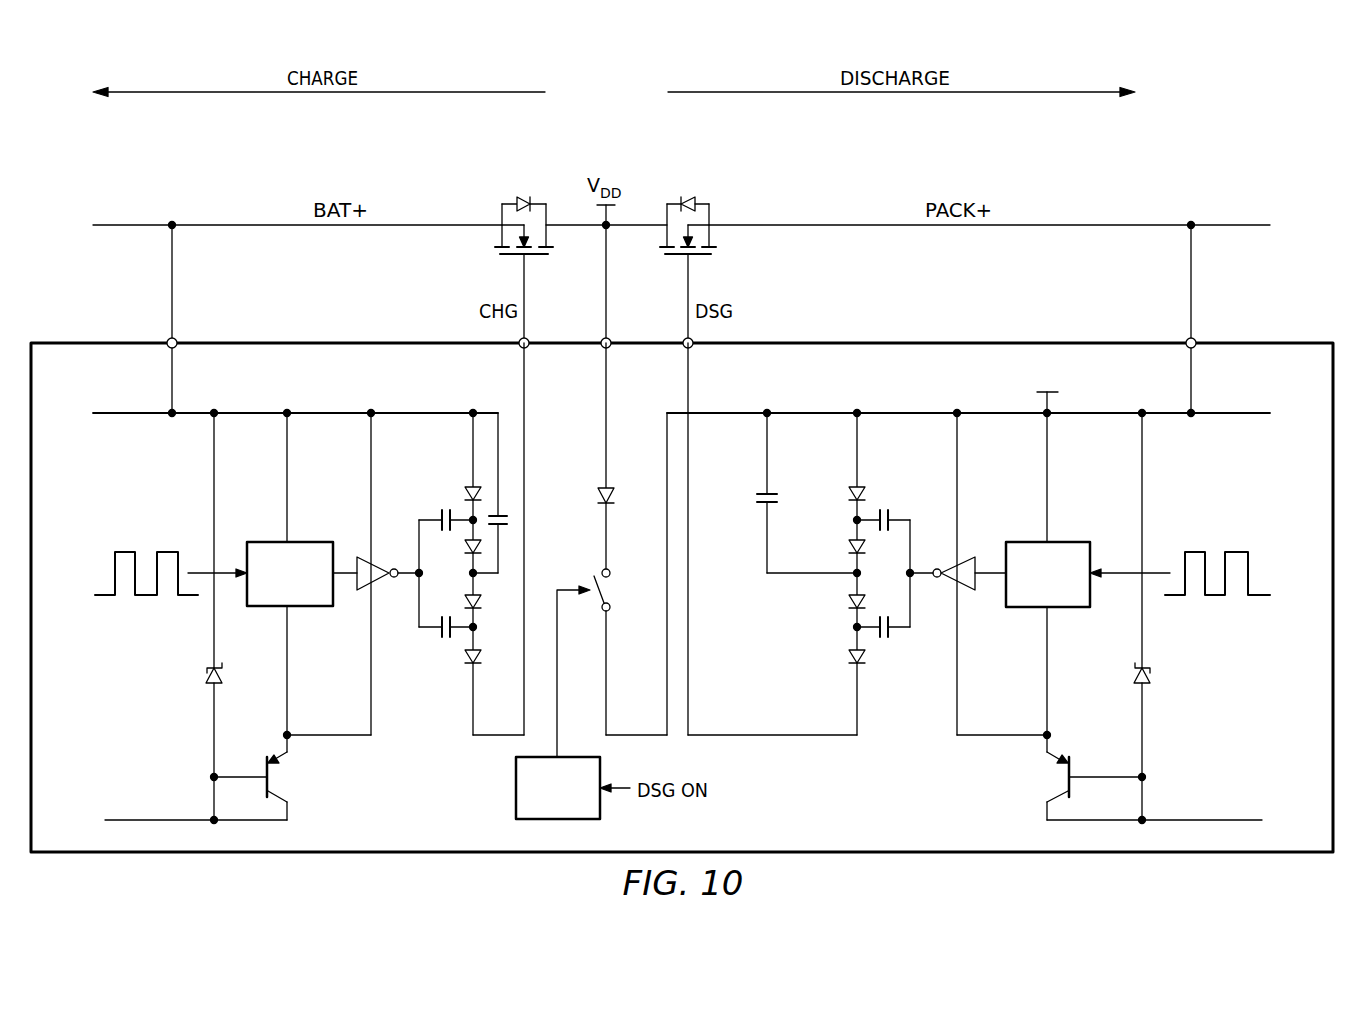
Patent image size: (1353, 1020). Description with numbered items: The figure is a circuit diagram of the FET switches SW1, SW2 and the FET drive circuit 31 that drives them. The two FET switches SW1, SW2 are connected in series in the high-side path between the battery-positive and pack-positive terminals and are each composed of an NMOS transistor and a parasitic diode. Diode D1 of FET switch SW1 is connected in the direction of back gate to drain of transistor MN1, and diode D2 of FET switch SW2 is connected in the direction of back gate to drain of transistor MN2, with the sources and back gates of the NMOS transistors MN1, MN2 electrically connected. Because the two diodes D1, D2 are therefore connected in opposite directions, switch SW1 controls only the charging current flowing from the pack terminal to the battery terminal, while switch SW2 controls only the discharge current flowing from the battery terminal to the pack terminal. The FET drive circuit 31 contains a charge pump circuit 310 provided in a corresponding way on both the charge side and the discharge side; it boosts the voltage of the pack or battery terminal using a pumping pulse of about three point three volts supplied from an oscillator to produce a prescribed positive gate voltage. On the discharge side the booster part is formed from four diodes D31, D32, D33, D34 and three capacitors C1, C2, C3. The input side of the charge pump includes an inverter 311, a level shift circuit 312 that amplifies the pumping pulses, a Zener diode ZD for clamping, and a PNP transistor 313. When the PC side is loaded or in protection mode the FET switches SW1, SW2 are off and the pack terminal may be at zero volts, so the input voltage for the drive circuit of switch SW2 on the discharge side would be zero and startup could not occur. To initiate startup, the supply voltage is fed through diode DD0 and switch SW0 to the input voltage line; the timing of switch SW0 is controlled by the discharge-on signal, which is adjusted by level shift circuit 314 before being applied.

The FET drive circuit 31 is at (344, 336).
The charge pump circuit 310 is at (385, 768).
The inverter 311 is at (978, 556).
The level shift circuit 312 is at (1068, 541).
The PNP transistor 313 is at (1072, 784).
The level shift circuit 314 is at (516, 798).
The FET switch SW1 is at (494, 165).
The FET switch SW2 is at (721, 165).
The diode D1 is at (521, 197).
The diode D2 is at (687, 197).
The NMOS transistor MN1 is at (512, 271).
The NMOS transistor MN2 is at (703, 271).
The diode DD0 is at (598, 494).
The switch SW0 is at (609, 589).
The capacitor C1 is at (885, 505).
The capacitor C2 is at (885, 640).
The capacitor C3 is at (757, 497).
The diode D31 is at (848, 492).
The diode D32 is at (848, 548).
The diode D33 is at (848, 600).
The diode D34 is at (848, 655).
The Zener diode ZD is at (1150, 672).